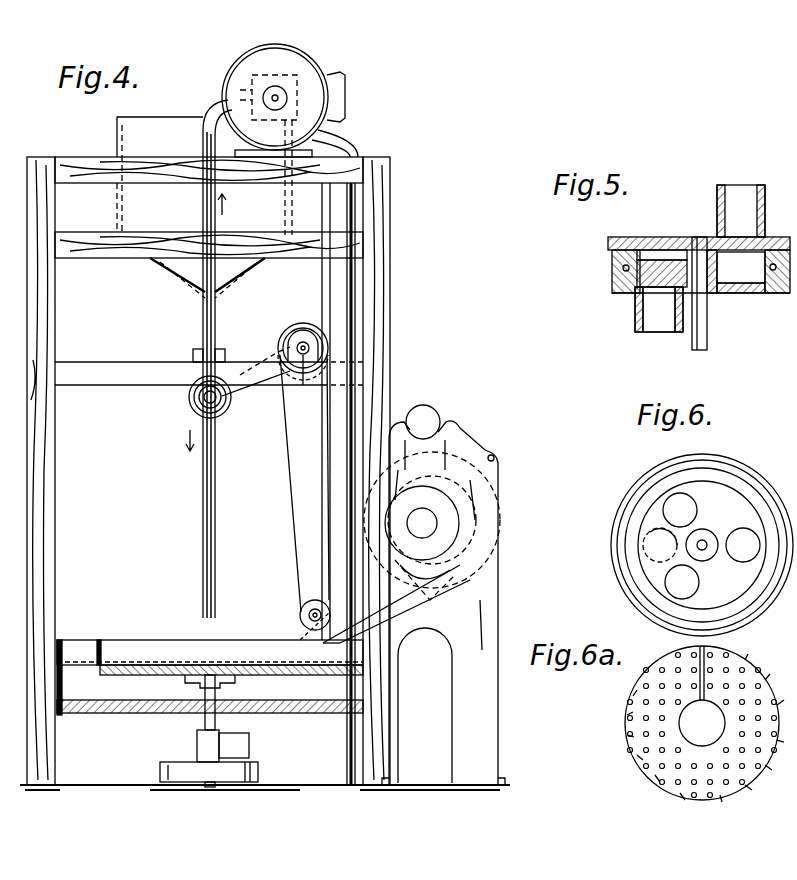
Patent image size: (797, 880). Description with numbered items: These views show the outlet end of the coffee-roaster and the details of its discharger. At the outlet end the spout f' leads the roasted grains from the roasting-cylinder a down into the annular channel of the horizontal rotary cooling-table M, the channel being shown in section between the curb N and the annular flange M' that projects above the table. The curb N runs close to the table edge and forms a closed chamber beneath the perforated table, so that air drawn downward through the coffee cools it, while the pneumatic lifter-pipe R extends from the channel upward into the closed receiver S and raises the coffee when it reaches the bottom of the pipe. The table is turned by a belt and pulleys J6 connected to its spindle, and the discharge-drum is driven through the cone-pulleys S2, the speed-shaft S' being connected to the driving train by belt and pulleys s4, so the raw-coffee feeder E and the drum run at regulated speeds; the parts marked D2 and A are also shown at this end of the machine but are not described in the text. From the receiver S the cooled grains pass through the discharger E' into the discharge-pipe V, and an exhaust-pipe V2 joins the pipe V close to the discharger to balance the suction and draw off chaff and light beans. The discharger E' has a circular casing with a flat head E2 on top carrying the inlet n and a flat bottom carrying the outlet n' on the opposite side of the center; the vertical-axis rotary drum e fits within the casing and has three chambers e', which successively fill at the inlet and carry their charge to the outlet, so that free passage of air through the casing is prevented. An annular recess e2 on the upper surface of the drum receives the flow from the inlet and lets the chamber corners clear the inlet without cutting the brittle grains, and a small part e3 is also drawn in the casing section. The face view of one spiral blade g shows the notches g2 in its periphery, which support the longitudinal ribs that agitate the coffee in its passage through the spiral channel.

In FIG. 4, the motor T is at (305, 62).
In FIG. 4, the discharge-pipe V is at (216, 445).
In FIG. 4, the exhaust-pipe V2 is at (202, 215).
In FIG. 4, the receiver S is at (197, 279).
In FIG. 4, the discharger E' is at (226, 337).
In FIG. 5, the discharger E' is at (675, 270).
In FIG. 4, the cone-pulleys S2 is at (190, 400).
In FIG. 4, the pneumatic lifter-pipe R is at (322, 312).
In FIG. 4, the pipe S' is at (304, 387).
In FIG. 4, the belt and pulleys s4 is at (305, 585).
In FIG. 4, the spout f' is at (396, 604).
In FIG. 4, the roller D2 is at (434, 411).
In FIG. 4, the pedestal A is at (458, 682).
In FIG. 4, the roasting-cylinder a is at (432, 526).
In FIG. 4, the rotary cooling-table M is at (210, 654).
In FIG. 4, the annular flange M' is at (116, 629).
In FIG. 4, the curb N is at (63, 682).
In FIG. 4, the pulleys J6 is at (160, 770).
In FIG. 5, the flat head E2 is at (645, 240).
In FIG. 5, the annular recess e2 is at (650, 250).
In FIG. 5, the rotary drum e is at (662, 288).
In FIG. 6, the rotary drum e is at (705, 562).
In FIG. 5, the ball e3 is at (623, 271).
In FIG. 5, the outlet n' is at (640, 310).
In FIG. 5, the inlet n is at (727, 211).
In FIG. 5, the chambers e' is at (736, 271).
In FIG. 6, the chambers e' is at (711, 546).
In FIG. 6, the raw-coffee feeder E is at (691, 545).
In FIG. 6, the port m' is at (619, 550).
In FIG. 6A, the spiral blade g is at (640, 766).
In FIG. 6A, the notches g2 is at (630, 750).